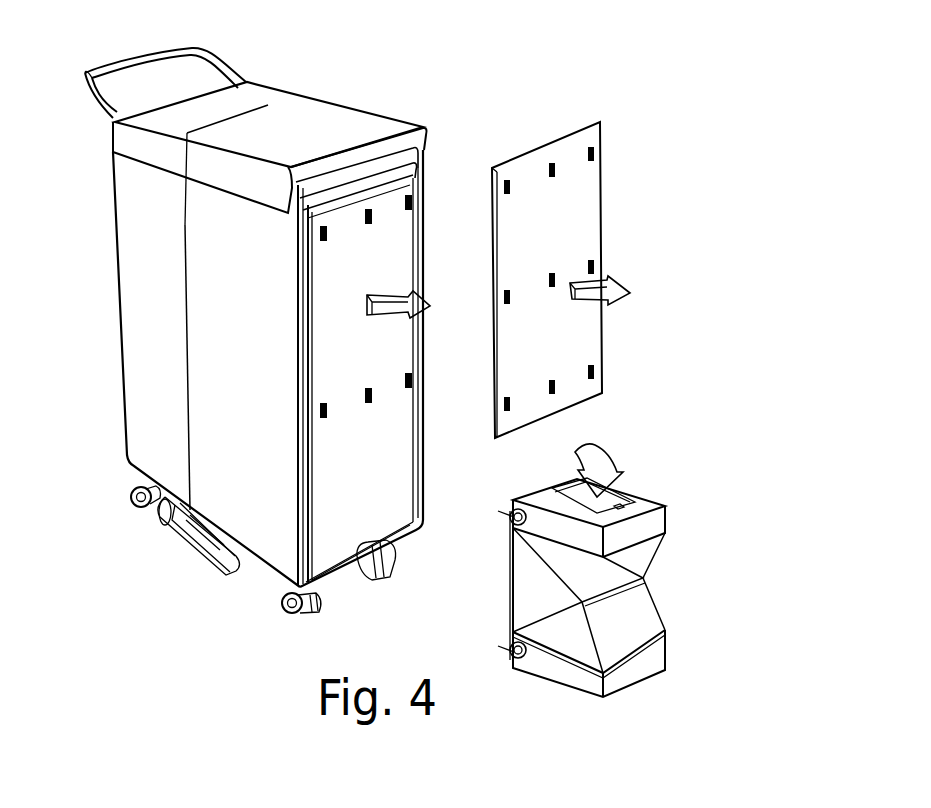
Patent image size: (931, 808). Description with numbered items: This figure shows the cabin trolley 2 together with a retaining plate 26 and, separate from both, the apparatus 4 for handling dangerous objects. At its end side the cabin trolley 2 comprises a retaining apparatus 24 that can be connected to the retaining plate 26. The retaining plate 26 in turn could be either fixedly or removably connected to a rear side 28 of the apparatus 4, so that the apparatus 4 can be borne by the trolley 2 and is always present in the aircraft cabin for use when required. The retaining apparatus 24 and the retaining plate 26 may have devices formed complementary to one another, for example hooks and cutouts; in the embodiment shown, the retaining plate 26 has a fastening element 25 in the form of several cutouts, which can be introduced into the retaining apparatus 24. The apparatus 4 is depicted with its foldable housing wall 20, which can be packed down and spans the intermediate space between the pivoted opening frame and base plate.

The cabin trolley 2 is at (266, 101).
The apparatus 4 is at (636, 480).
The foldable housing wall 20 is at (630, 612).
The retaining apparatus 24 is at (331, 256).
The fastening element 25 is at (598, 153).
The retaining plate 26 is at (588, 207).
The rear side 28 is at (503, 579).